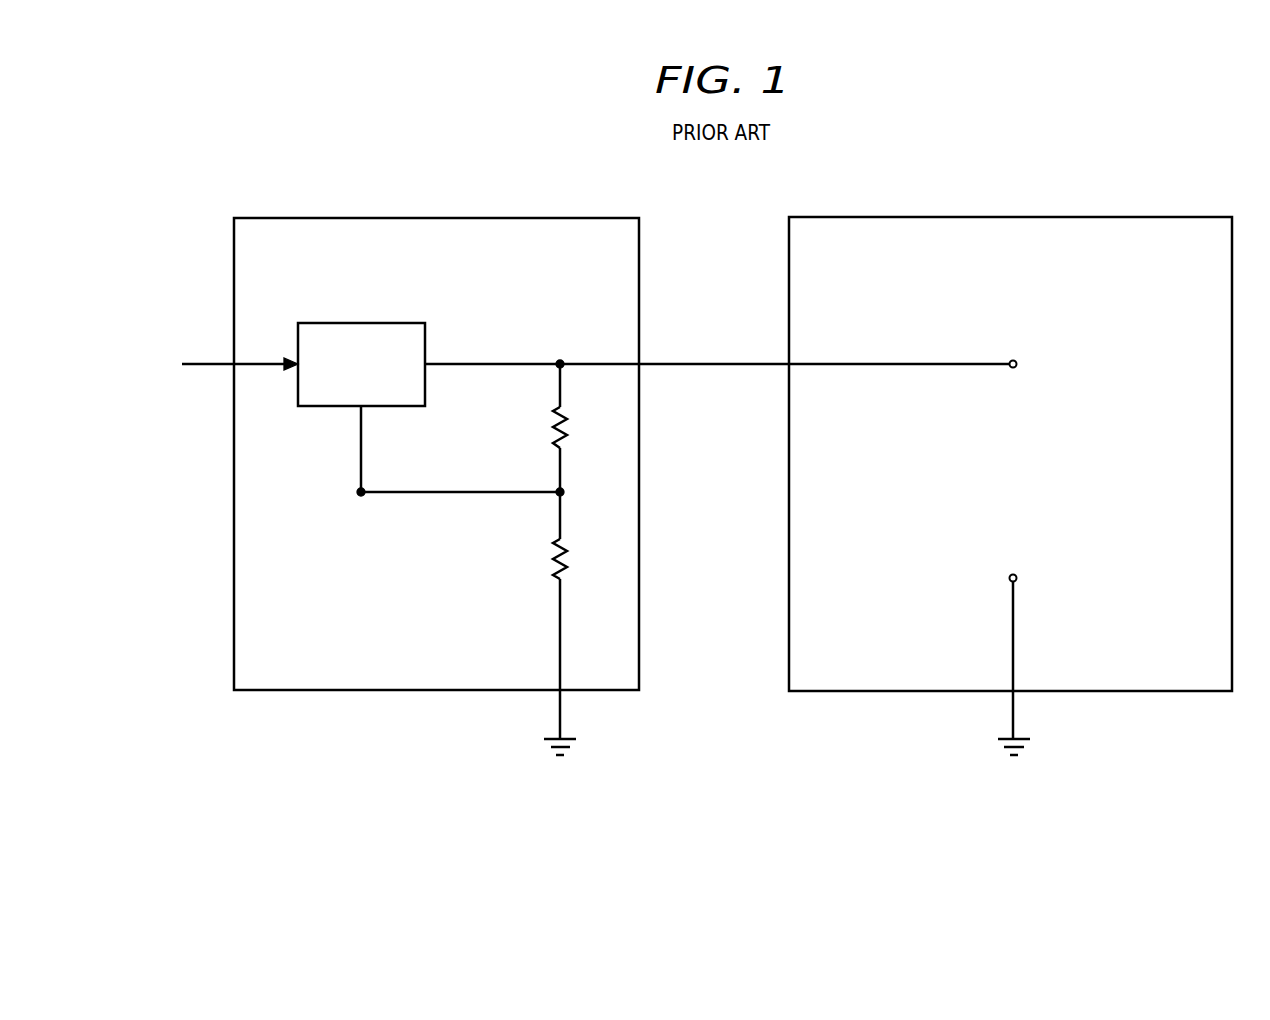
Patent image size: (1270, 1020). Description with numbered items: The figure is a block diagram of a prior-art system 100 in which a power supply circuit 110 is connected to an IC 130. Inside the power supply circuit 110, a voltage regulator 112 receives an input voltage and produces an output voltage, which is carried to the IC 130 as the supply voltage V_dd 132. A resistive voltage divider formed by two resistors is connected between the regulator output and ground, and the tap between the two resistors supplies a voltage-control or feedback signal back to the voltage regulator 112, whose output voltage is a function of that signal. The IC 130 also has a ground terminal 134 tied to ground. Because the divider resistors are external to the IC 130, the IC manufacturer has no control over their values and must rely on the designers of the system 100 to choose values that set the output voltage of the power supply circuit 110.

The system 100 is at (994, 180).
The power supply circuit 110 is at (575, 218).
The voltage regulator 112 is at (363, 323).
The IC 130 is at (1172, 218).
The voltage V_dd 132 is at (1060, 372).
The ground terminal 134 is at (1018, 578).